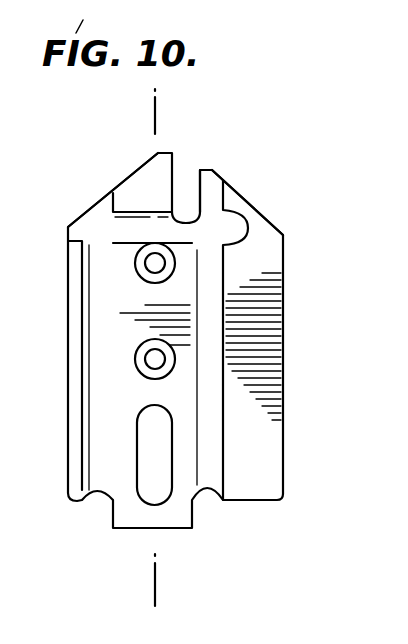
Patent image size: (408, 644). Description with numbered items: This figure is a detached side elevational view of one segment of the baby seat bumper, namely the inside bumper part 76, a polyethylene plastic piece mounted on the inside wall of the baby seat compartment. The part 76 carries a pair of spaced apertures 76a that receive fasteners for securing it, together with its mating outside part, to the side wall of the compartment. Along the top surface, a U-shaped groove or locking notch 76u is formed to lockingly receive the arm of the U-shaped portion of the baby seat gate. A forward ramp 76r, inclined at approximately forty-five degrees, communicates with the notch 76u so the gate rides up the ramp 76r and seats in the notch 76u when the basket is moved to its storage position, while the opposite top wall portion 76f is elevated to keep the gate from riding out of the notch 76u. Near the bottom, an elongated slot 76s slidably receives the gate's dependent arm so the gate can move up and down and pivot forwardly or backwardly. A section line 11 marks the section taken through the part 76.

The section line 11- 11 is at (155, 98).
The inside bumper part 76 is at (283, 384).
The top wall portion 76f is at (130, 172).
The U-shaped groove or locking notch 76u is at (196, 178).
The forward ramp 76r is at (253, 203).
The spaced apertures 76a is at (158, 355).
The elongated slot 76s is at (142, 498).